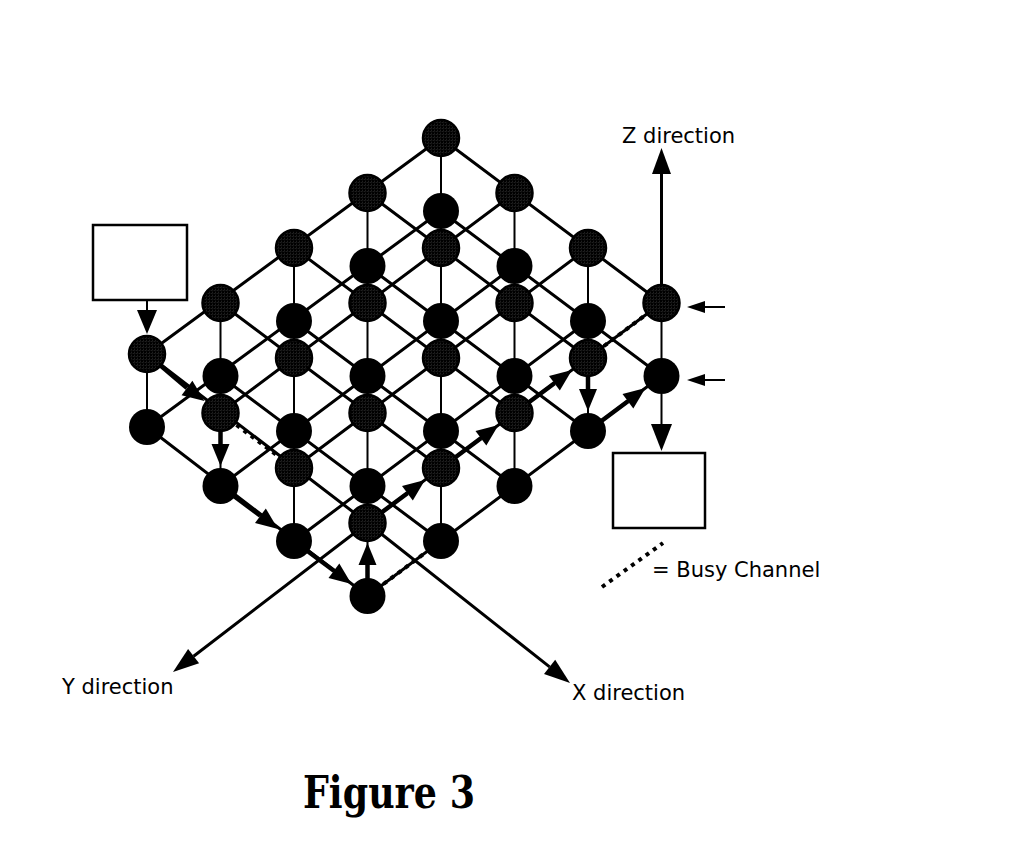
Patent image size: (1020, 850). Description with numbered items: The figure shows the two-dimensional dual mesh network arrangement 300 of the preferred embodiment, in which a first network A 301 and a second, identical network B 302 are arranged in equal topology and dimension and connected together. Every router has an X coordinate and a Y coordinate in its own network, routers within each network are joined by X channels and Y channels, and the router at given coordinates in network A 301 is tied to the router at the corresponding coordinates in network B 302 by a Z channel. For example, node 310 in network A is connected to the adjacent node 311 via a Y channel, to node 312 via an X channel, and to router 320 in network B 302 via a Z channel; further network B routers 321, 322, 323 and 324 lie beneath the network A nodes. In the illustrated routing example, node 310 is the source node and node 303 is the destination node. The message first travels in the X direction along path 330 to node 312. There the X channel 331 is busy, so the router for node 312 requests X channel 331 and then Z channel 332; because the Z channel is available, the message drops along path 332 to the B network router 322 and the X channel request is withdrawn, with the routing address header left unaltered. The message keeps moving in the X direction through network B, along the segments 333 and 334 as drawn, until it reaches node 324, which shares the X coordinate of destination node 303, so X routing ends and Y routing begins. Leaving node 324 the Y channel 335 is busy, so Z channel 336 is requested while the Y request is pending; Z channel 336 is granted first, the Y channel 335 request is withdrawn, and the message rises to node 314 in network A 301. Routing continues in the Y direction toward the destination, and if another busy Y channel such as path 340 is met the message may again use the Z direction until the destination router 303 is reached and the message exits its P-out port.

The dual mesh network arrangement 300 is at (558, 73).
The network A 301 is at (797, 339).
The network B 302 is at (797, 412).
The destination node 303 is at (673, 397).
The source node 310 is at (120, 352).
The adjacent node 311 is at (228, 280).
The node 312 is at (201, 425).
The node 314 is at (386, 524).
The router 320 is at (120, 428).
The B-network node 321 is at (201, 355).
The B network router 322 is at (202, 502).
The B-network node 323 is at (292, 587).
The node 324 is at (370, 620).
The path 330 is at (163, 380).
The X channel 331 is at (238, 515).
The Z channel 332 is at (212, 437).
The route segment / channel 333 is at (262, 532).
The route segment / channel 334 is at (331, 588).
The Y channel 335 is at (393, 583).
The Z channel 336 is at (380, 562).
The path 340 is at (622, 323).